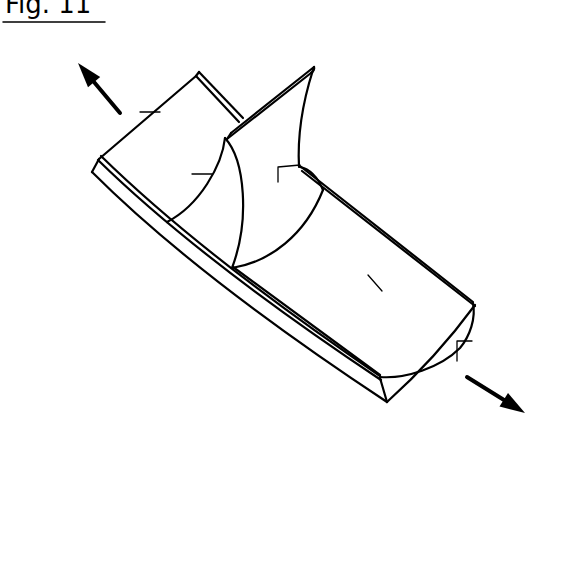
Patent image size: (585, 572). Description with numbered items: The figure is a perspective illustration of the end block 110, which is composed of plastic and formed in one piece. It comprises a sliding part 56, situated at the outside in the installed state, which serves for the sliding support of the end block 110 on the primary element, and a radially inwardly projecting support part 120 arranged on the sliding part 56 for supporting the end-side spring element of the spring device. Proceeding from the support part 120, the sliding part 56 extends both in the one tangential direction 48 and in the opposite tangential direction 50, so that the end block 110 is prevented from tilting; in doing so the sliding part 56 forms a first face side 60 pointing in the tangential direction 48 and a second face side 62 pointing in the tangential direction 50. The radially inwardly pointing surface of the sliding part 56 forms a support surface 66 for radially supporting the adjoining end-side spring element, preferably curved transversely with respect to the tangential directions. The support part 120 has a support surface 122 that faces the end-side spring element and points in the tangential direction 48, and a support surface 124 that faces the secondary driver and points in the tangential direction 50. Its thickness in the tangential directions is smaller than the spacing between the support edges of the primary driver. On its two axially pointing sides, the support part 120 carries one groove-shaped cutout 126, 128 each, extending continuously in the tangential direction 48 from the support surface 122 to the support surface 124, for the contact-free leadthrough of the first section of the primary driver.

The end block 110 is at (506, 74).
The sliding part 56 is at (247, 297).
The second face side 62 is at (472, 341).
The support surface 66 is at (382, 291).
The first face side 60 is at (157, 110).
The tangential direction 48 is at (112, 92).
The support surface 124 is at (197, 173).
The support part 120 is at (277, 90).
The cutout 126 is at (312, 137).
The support surface 122 is at (300, 165).
The cutout 128 is at (212, 200).
The tangential direction 50 is at (490, 387).